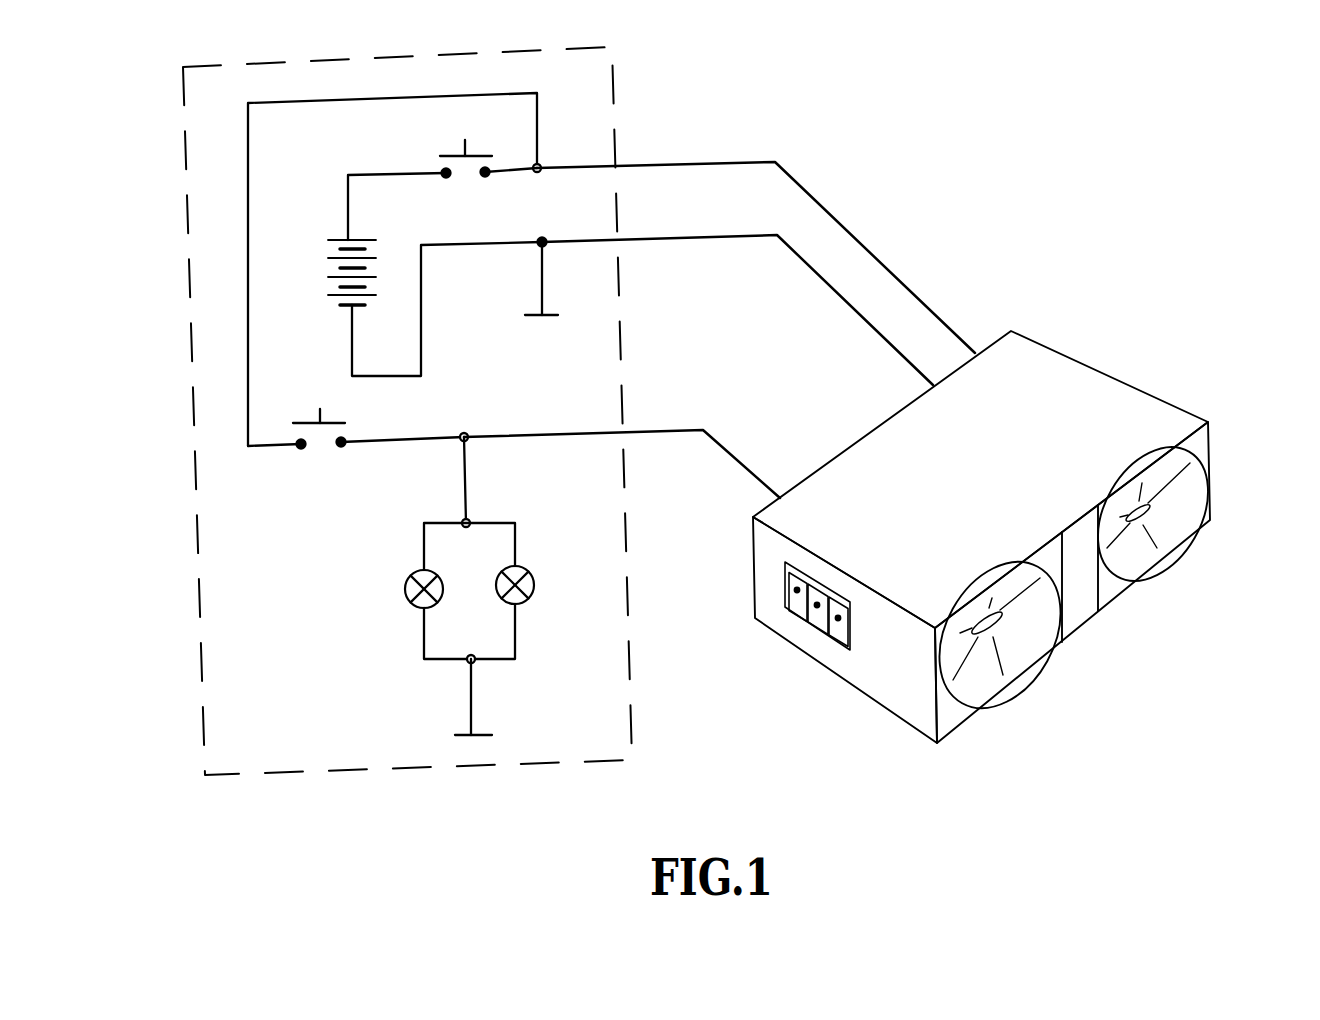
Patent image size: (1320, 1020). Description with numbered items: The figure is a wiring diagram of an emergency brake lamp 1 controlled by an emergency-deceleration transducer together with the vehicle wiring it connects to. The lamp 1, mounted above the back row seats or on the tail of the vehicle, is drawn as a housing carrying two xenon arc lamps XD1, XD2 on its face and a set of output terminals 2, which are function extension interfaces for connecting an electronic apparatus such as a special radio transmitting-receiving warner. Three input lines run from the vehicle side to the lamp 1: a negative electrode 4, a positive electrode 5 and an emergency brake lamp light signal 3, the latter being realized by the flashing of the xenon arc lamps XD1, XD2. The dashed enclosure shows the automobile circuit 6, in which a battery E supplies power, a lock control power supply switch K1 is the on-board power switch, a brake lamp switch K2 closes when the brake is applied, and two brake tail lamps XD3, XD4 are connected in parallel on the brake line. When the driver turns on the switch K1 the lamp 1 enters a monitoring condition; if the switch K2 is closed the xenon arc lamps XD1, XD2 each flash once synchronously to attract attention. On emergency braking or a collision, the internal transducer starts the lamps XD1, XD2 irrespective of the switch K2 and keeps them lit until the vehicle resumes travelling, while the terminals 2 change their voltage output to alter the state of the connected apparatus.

The emergency brake lamp 1 is at (981, 527).
The output terminals 2 is at (828, 664).
The emergency brake lamp light signal 3 is at (622, 464).
The negative electrode 4 is at (737, 310).
The positive electrode 5 is at (756, 257).
The automobile circuit 6 is at (407, 433).
The lock control power supply switch K1 is at (488, 144).
The brake lamp switch K2 is at (319, 413).
The battery E is at (339, 272).
The xenon arc lamp XD1 is at (1182, 514).
The xenon arc lamp XD2 is at (1042, 635).
The brake tail lamp XD3 is at (393, 589).
The brake tail lamp XD4 is at (547, 585).